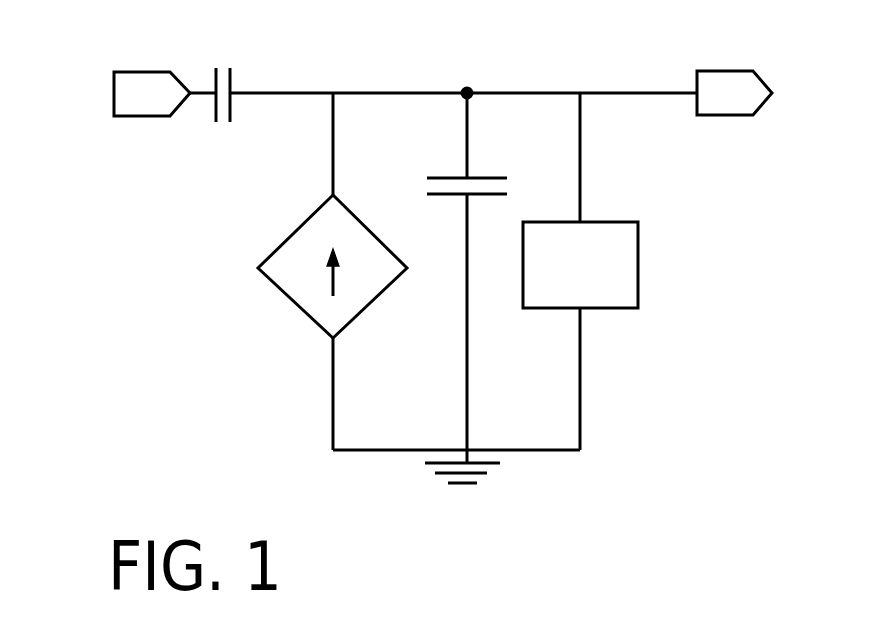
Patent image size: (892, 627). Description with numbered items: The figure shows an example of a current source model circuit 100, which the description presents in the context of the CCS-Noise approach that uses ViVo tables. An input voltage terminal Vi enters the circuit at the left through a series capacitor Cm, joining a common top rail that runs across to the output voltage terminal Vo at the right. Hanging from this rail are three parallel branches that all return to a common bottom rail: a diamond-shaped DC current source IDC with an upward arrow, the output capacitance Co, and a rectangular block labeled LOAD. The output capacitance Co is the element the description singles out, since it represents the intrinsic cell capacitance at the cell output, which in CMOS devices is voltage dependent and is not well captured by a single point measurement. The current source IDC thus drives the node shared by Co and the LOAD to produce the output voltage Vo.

The current source model circuit 100 is at (207, 27).
The input voltage Vi is at (152, 94).
The output voltage Vo is at (734, 93).
The coupling capacitor Cm is at (242, 112).
The DC current source IDC is at (324, 266).
The output capacitance Co is at (463, 172).
The load LOAD is at (580, 265).